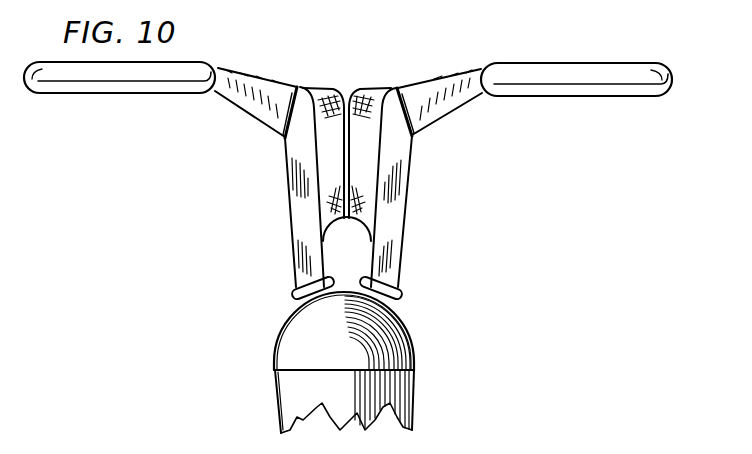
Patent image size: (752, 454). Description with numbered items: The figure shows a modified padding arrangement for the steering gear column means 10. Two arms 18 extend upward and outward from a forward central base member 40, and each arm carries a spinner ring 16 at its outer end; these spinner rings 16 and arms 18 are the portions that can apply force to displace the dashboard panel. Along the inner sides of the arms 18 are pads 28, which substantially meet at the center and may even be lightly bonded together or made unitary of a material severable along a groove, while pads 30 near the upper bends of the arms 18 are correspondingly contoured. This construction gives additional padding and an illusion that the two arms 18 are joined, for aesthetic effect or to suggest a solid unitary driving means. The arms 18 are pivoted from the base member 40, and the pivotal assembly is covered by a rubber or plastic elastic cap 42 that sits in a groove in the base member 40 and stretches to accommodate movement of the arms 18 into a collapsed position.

The steering gear column means 10 is at (424, 168).
The spinner rings 16 is at (167, 93).
The arms 18 is at (291, 213).
The pads 28 is at (337, 158).
The pads 30 is at (287, 94).
The base member 40 is at (348, 398).
The elastic cap 42 is at (355, 348).